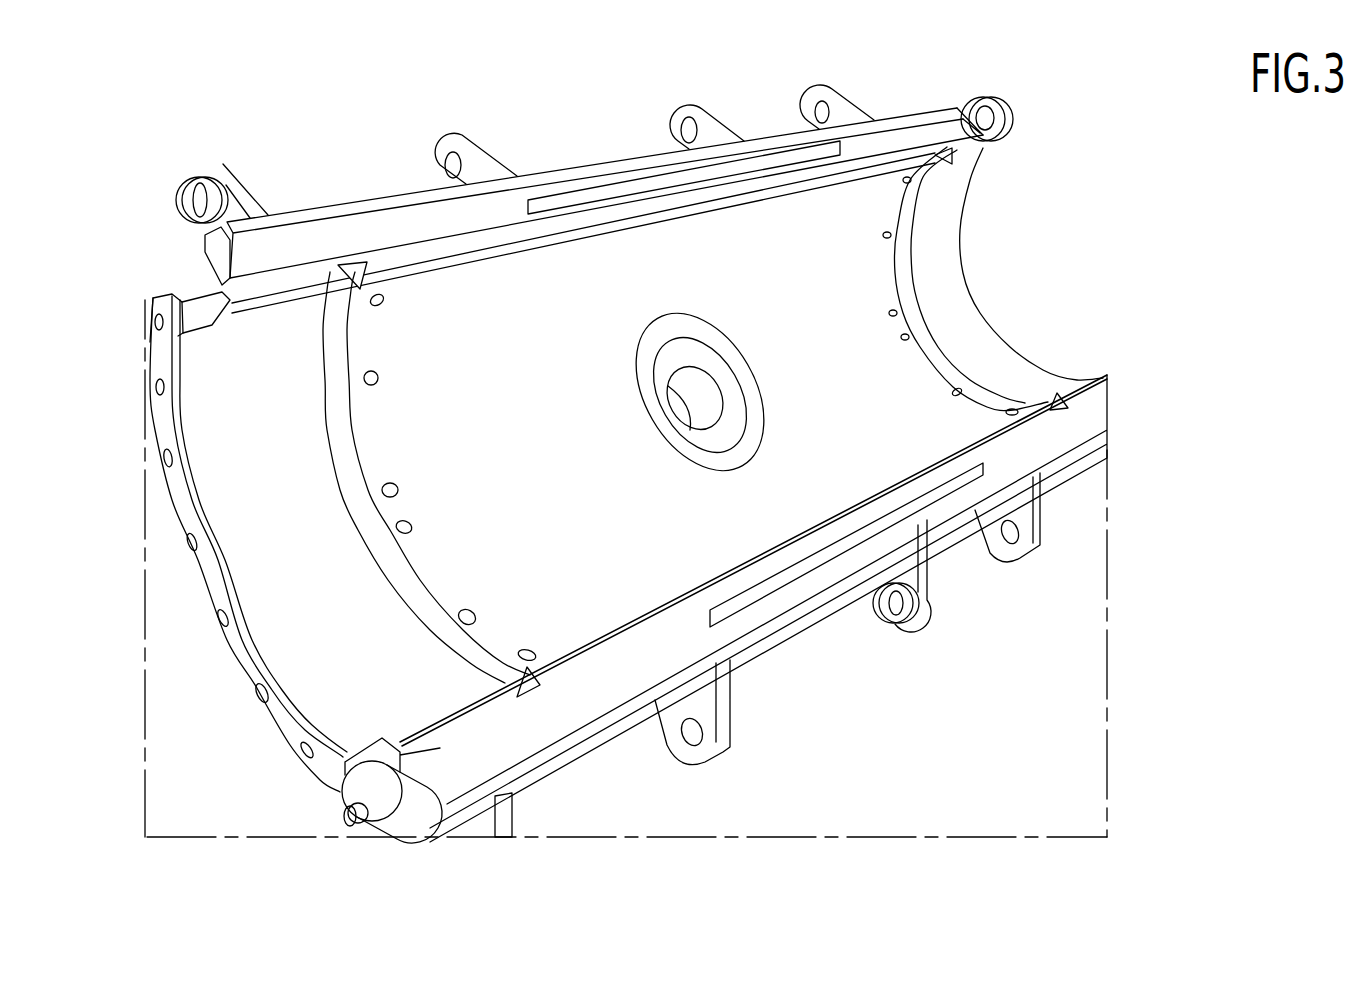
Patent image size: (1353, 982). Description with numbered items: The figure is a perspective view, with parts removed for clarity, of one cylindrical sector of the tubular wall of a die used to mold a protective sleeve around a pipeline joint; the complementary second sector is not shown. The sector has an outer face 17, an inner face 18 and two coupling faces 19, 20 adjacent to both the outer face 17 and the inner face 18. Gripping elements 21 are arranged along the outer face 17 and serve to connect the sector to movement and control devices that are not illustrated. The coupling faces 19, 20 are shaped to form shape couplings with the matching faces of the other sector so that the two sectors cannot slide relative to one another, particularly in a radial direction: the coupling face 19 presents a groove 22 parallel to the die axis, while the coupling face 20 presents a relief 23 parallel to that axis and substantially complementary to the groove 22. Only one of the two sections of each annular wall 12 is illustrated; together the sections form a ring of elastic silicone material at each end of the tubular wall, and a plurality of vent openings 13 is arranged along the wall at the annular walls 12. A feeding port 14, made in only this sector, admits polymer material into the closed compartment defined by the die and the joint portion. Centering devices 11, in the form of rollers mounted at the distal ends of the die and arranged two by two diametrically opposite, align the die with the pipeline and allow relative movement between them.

The centering devices 11 is at (1007, 120).
The annular wall 12 is at (939, 258).
The vent openings 13 is at (913, 237).
The feeding port 14 is at (710, 408).
The outer face 17 is at (557, 152).
The inner face 18 is at (855, 396).
The coupling face 19 is at (940, 104).
The coupling face 20 is at (1096, 407).
The gripping elements 21 is at (225, 166).
The groove 22 is at (620, 175).
The relief 23 is at (785, 578).